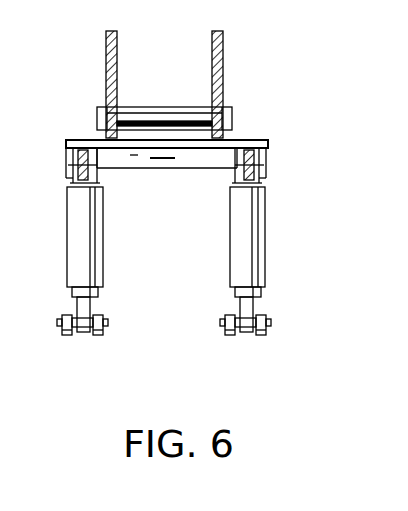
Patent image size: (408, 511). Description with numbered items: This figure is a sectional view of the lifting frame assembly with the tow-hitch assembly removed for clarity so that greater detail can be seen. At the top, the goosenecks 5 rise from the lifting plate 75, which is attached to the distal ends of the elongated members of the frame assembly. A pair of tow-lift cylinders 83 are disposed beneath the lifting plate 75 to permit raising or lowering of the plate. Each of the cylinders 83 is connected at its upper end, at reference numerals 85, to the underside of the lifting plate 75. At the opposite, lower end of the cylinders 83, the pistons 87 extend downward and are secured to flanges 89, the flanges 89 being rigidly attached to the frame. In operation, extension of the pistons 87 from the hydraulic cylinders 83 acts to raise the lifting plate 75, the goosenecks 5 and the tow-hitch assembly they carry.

The goosenecks 5 is at (223, 52).
The lifting plate 75 is at (240, 138).
The connections of cylinders to lift plate 85 is at (98, 177).
The tow-lift cylinders 83 is at (247, 237).
The pistons 87 is at (238, 306).
The flanges 89 is at (103, 337).